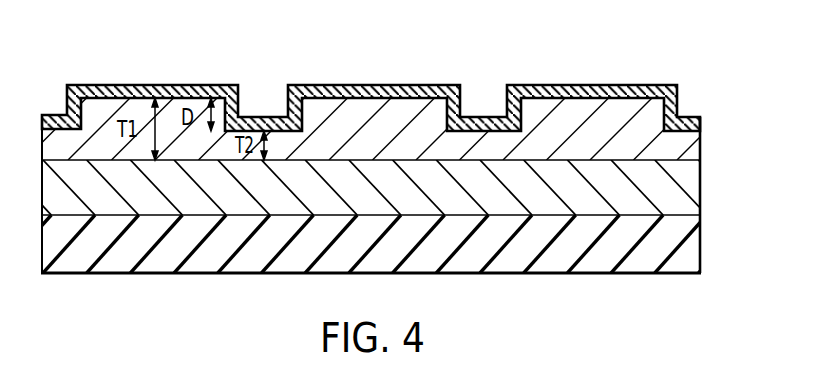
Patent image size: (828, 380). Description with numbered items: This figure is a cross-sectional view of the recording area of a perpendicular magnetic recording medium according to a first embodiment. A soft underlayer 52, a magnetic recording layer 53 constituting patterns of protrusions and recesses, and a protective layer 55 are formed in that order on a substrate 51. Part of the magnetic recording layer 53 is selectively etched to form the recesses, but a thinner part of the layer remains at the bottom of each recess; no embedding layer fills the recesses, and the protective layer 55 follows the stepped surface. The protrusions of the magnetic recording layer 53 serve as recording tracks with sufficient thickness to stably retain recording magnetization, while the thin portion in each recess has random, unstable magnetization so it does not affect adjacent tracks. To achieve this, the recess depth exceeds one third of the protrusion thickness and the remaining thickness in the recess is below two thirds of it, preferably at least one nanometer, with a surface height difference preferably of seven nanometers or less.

The substrate 51 is at (690, 249).
The soft underlayer 52 is at (690, 191).
The magnetic recording layer 53 is at (683, 149).
The protective layer 55 is at (383, 96).